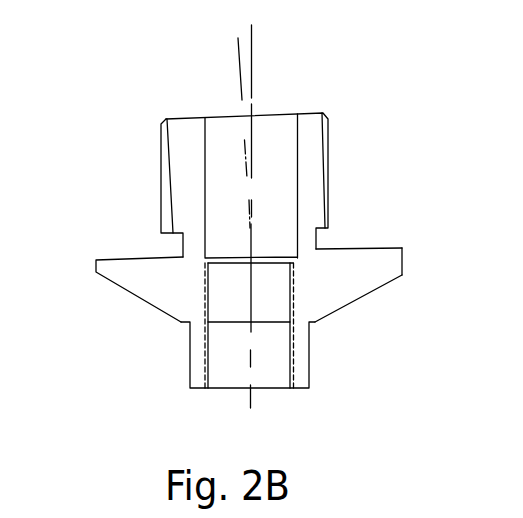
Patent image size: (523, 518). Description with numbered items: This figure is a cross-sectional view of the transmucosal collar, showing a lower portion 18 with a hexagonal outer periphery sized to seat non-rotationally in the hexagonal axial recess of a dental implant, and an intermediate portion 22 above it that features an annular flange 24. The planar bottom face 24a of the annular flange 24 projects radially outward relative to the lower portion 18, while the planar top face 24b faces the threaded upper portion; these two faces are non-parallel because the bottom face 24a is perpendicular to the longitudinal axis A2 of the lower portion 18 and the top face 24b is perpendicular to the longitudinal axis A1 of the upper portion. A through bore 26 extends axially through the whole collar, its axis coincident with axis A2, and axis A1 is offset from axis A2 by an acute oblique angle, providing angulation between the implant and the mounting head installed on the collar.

The lower portion 18 is at (298, 375).
The intermediate portion 22 is at (258, 209).
The annular flange 24 is at (285, 255).
The planar bottom face 24a is at (403, 275).
The planar top face 24b is at (350, 245).
The through bore 26 is at (274, 132).
The longitudinal axis of the upper portion A1 is at (238, 80).
The longitudinal axis of the lower portion A2 is at (256, 55).